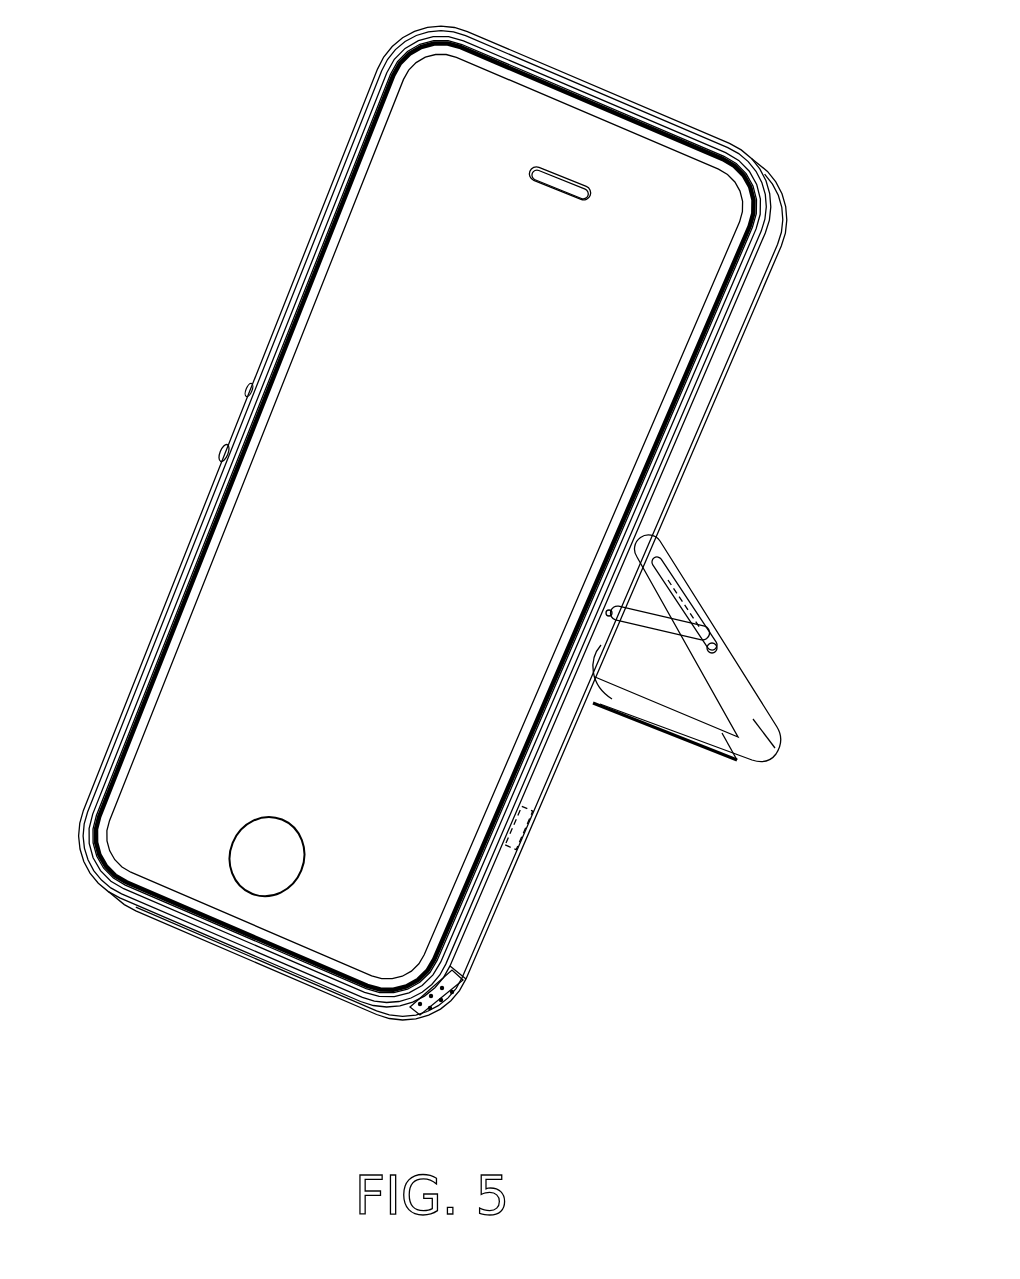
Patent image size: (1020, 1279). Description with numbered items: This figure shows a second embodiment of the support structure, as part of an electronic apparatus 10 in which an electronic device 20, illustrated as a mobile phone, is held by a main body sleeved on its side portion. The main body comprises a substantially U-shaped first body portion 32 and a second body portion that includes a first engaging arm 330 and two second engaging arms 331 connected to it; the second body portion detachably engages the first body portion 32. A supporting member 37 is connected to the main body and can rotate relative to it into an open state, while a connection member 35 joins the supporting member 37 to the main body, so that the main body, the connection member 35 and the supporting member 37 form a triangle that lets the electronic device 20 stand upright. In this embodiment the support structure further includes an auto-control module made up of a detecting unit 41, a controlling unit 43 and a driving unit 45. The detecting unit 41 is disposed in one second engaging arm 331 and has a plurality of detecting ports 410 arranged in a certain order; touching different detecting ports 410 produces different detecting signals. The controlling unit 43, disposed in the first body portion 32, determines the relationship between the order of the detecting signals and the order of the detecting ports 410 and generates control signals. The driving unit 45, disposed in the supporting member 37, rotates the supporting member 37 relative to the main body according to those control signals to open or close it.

The electronic apparatus 10 is at (668, 62).
The electronic device 20 is at (423, 295).
The first body portion 32 is at (745, 320).
The connection member 35 is at (692, 628).
The supporting member 37 is at (740, 693).
The detecting unit 41 is at (455, 993).
The controlling unit 43 is at (525, 832).
The driving unit 45 is at (672, 572).
The first engaging arm 330 is at (325, 985).
The second engaging arm 331 is at (466, 964).
The detecting ports 410 is at (448, 1000).